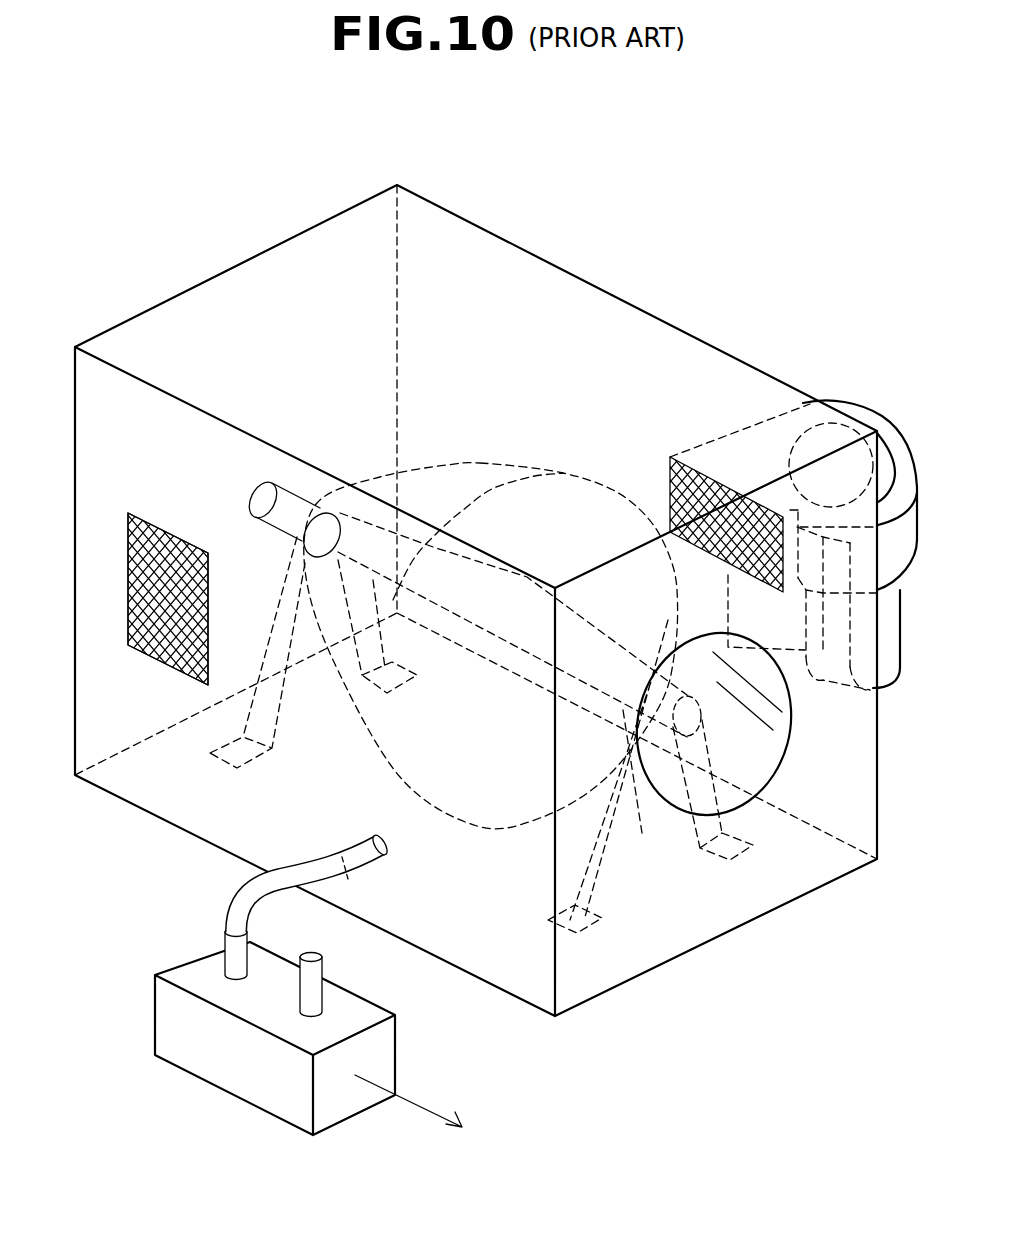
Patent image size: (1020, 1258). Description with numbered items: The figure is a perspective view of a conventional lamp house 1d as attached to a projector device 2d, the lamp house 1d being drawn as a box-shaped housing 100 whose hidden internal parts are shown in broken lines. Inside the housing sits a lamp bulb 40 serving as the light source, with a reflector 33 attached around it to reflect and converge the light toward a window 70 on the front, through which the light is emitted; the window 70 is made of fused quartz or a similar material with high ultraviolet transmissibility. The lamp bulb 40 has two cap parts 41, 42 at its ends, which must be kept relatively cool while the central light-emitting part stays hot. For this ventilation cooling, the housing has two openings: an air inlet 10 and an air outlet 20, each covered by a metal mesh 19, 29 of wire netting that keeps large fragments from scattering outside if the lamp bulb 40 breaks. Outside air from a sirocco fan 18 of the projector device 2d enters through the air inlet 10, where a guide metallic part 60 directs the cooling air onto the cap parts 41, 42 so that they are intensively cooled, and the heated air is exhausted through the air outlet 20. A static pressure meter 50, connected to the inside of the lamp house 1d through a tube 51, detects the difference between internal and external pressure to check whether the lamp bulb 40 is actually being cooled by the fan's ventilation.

The casing 100 is at (298, 236).
The lamp house 1d is at (580, 234).
The air outlet 20 is at (160, 522).
The metal mesh 29 is at (165, 662).
The cap part 42 is at (285, 483).
The lamp bulb 40 is at (524, 600).
The cap part 41 is at (700, 718).
The reflector 33 is at (466, 830).
The window 70 is at (762, 785).
The metal mesh 19 is at (700, 470).
The air inlet 10 is at (697, 477).
The projector device 2d is at (823, 403).
The sirocco fan 18 is at (850, 403).
The guide metallic part 60 is at (833, 657).
The static pressure meter 50 is at (183, 1073).
The tube 51 is at (224, 888).